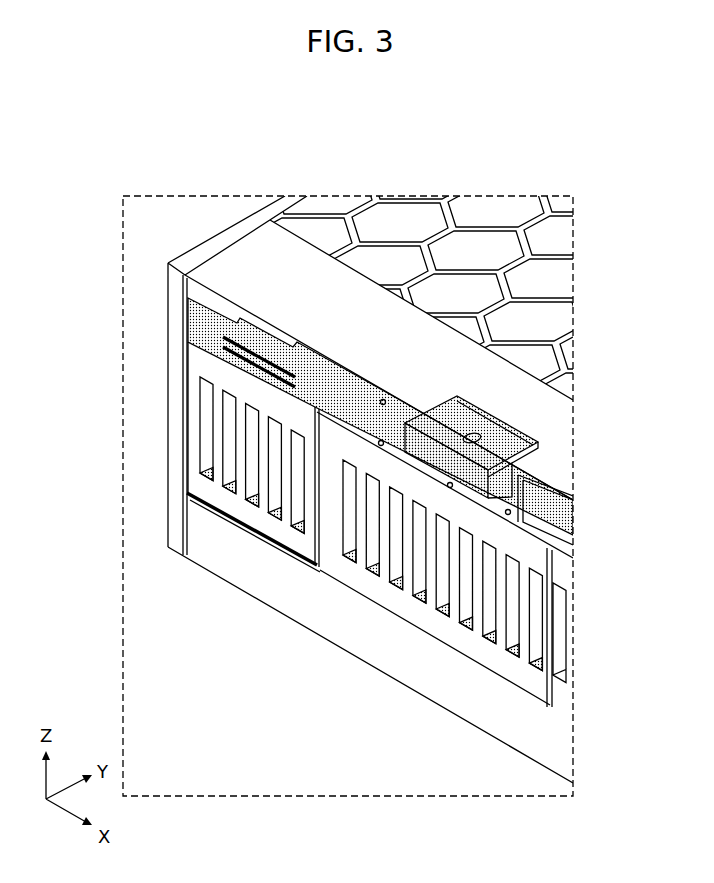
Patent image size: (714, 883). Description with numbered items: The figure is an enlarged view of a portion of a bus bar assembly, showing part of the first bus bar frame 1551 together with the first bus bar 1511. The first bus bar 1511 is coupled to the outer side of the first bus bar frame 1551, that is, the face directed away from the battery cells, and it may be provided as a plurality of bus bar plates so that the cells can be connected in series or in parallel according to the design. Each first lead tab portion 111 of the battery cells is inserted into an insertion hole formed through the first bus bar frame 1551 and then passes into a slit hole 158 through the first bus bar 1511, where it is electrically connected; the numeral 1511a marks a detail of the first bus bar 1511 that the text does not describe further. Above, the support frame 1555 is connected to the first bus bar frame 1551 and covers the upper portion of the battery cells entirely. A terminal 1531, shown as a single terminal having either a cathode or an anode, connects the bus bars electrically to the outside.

The first lead tab portion 111 is at (395, 567).
The slit hole 158 is at (190, 375).
The first bus bar 1511 is at (207, 484).
The panel bar 1511a is at (232, 484).
The terminal 1531 is at (360, 395).
The first bus bar frame 1551 is at (552, 736).
The support frame 1555 is at (562, 275).